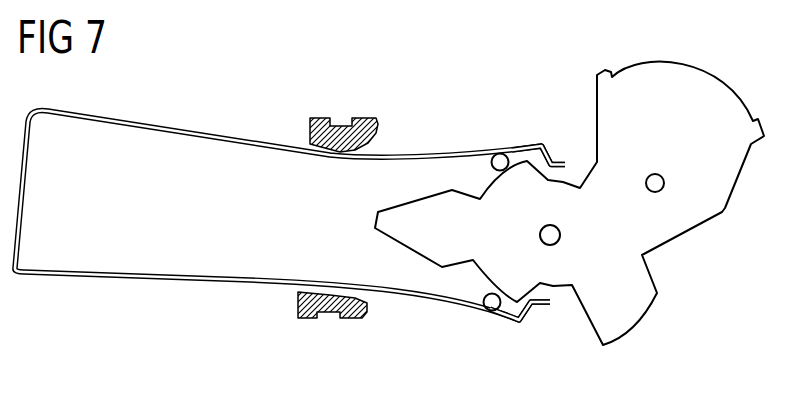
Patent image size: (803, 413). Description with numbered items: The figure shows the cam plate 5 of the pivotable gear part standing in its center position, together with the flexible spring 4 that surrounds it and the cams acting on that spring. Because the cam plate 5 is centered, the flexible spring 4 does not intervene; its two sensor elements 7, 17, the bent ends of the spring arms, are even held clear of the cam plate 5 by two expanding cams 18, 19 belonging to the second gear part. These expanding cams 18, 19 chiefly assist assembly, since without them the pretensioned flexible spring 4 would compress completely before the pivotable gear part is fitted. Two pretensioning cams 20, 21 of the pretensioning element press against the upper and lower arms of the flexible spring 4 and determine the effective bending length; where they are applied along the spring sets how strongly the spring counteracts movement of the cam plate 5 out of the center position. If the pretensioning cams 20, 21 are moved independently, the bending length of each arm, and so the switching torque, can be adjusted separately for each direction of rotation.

The flexible spring 4 is at (236, 135).
The cam plate 5 is at (553, 288).
The sensor element 7 is at (537, 317).
The sensor element 17 is at (557, 155).
The expanding cam 18 is at (492, 313).
The expanding cam 19 is at (499, 155).
The pretensioning cam 20 is at (350, 322).
The pretensioning cam 21 is at (366, 124).